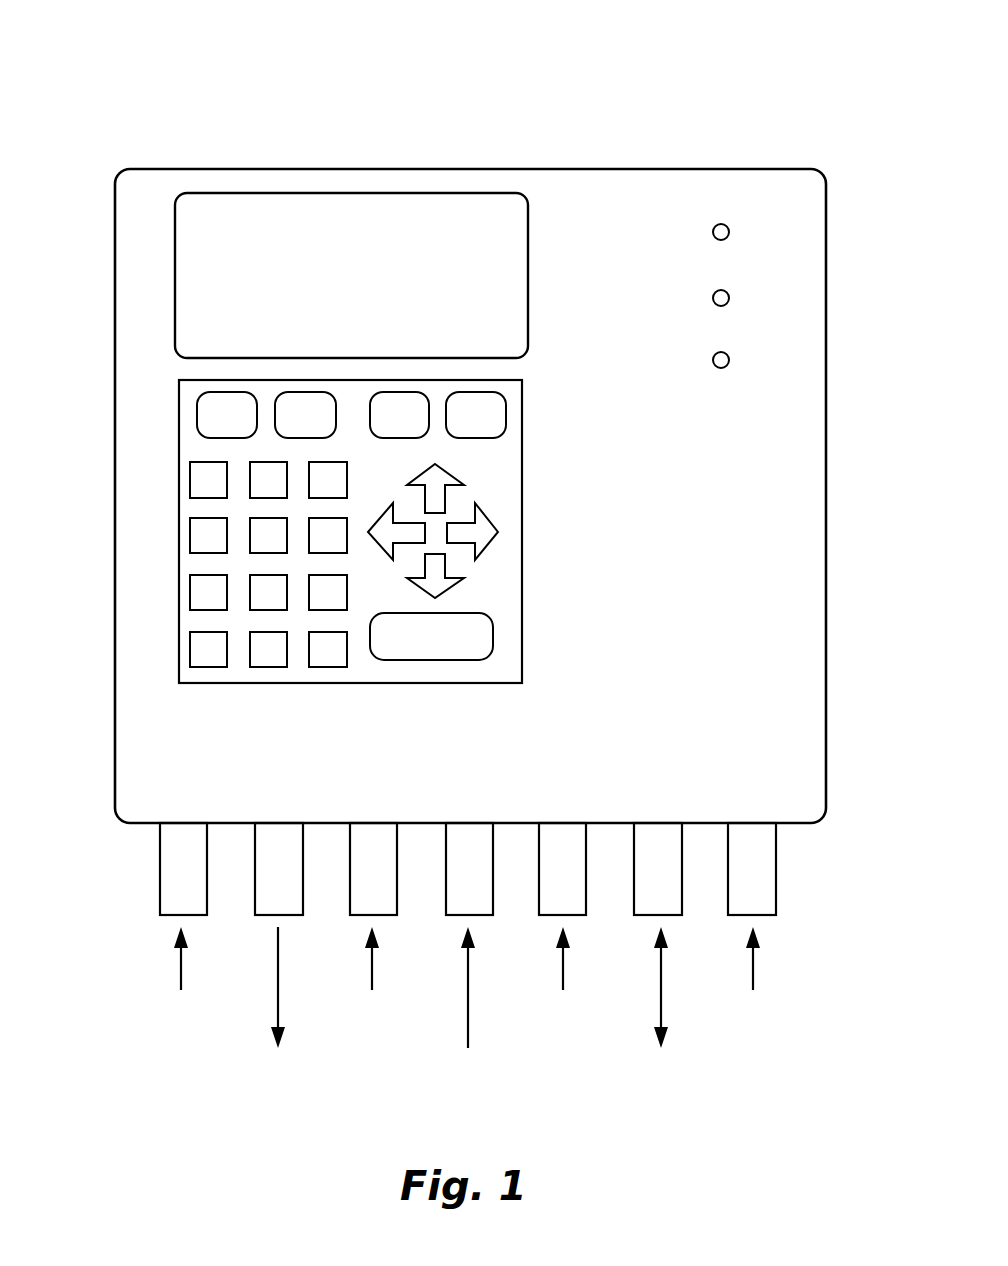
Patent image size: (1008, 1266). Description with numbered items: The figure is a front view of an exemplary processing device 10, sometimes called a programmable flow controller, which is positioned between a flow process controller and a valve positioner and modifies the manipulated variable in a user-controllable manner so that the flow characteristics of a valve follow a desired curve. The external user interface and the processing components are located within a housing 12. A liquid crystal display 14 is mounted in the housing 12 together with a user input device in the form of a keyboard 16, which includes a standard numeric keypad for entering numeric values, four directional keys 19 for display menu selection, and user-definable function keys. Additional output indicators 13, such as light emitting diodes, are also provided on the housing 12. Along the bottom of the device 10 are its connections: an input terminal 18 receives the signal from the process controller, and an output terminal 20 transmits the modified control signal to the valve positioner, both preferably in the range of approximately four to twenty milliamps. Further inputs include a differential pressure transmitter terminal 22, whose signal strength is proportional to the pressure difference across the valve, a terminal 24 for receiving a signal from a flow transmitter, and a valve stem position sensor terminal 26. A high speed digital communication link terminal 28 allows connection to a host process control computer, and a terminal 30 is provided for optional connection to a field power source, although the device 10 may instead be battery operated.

The processing device 10 is at (462, 92).
The housing 12 is at (724, 169).
The output indicators 13 is at (728, 300).
The liquid crystal display 14 is at (178, 245).
The keyboard 16 is at (205, 412).
The directional keys 19 is at (497, 522).
The input terminal 18 is at (168, 916).
The output terminal 20 is at (263, 916).
The differential pressure transmitter terminal 22 is at (358, 916).
The flow transmitter terminal 24 is at (453, 916).
The valve stem position sensor terminal 26 is at (548, 916).
The high speed digital communication link terminal 28 is at (642, 916).
The field power terminal 30 is at (736, 916).